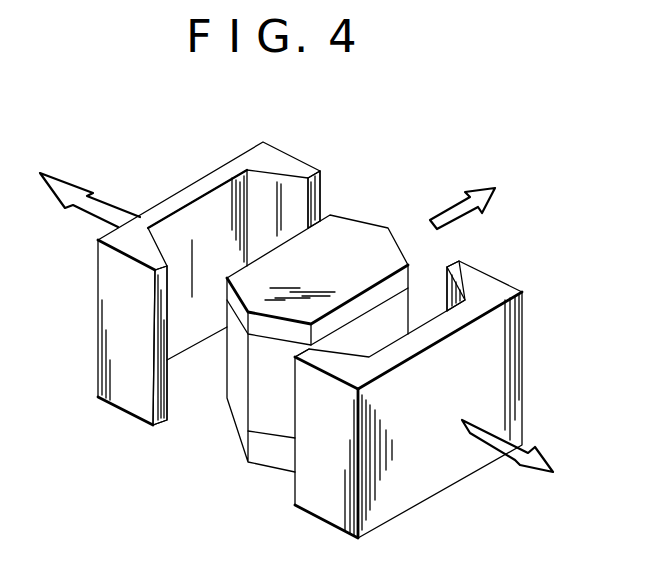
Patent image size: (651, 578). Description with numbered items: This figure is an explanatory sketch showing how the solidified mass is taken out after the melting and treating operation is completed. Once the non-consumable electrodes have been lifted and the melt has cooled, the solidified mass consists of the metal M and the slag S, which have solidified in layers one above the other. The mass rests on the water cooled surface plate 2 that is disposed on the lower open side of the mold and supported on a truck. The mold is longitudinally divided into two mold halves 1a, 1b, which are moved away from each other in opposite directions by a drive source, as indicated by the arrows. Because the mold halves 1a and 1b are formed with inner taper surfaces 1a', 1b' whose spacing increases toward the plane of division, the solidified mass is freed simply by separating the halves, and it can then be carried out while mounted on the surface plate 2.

The mold half 1a is at (431, 399).
The inner taper surface 1a' is at (410, 323).
The mold half 1b is at (209, 270).
The inner taper surface 1b' is at (196, 277).
The surface plate 2 is at (279, 460).
The slag S is at (268, 330).
The metal M is at (262, 409).